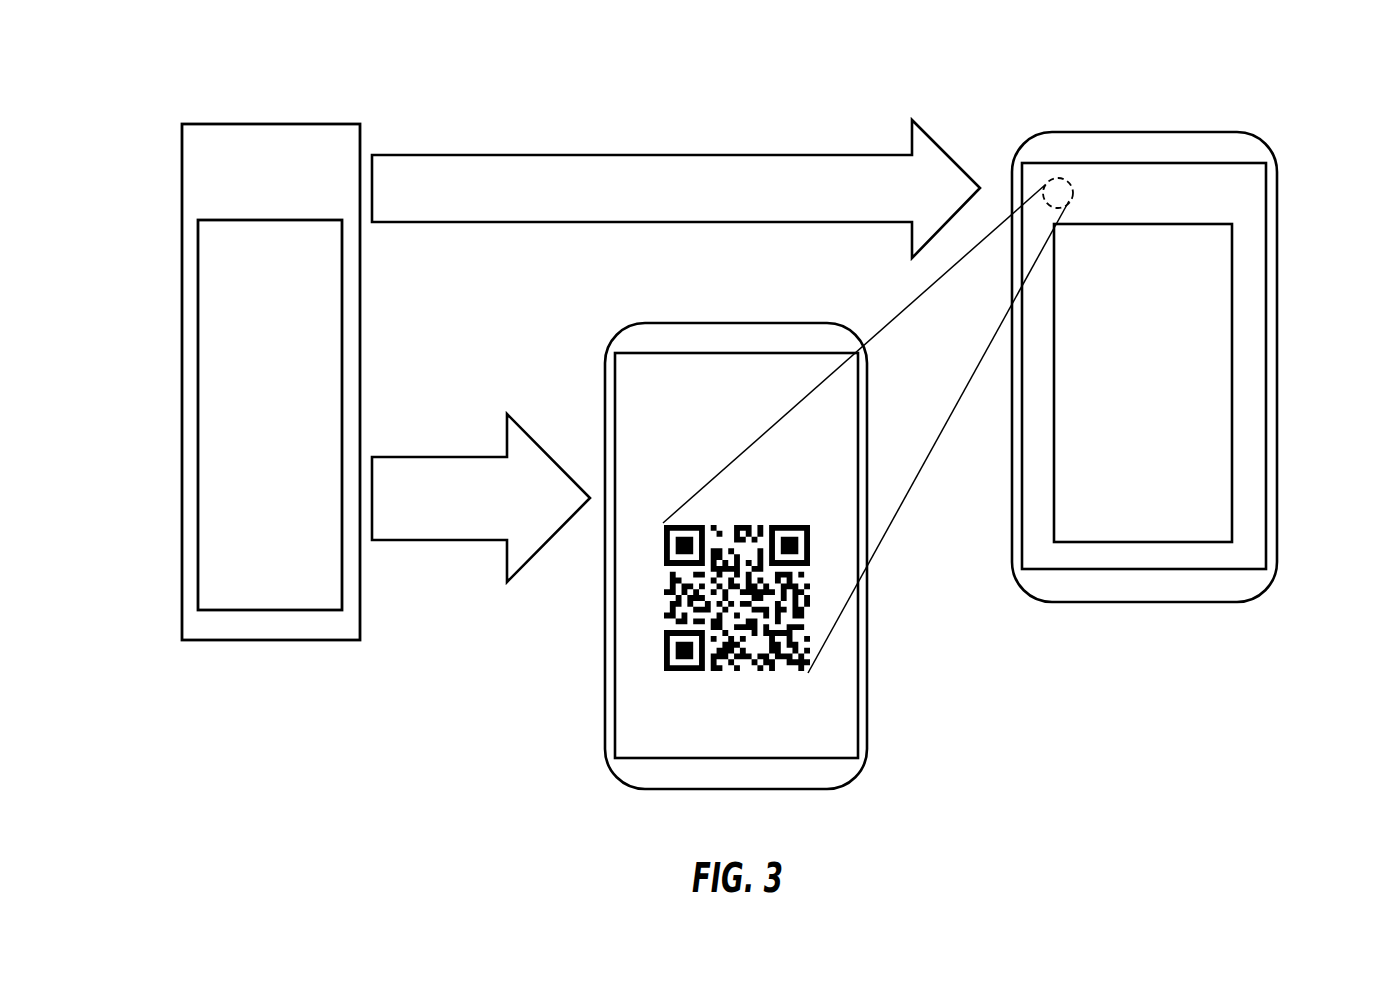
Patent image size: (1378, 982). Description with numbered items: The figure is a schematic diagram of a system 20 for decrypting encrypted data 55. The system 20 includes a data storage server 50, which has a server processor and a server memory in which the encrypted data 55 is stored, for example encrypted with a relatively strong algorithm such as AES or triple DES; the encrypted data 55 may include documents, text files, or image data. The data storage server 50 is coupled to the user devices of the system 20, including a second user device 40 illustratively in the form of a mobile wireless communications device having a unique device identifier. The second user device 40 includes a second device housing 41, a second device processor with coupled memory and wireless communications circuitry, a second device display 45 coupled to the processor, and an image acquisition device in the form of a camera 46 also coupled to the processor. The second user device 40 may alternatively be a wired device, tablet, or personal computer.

The system 20 is at (525, 86).
The second user device 40 is at (1158, 617).
The second device housing 41 is at (1277, 336).
The second device display 45 is at (1185, 434).
The camera 46 is at (1072, 178).
The data storage server 50 is at (272, 655).
The encrypted data 55 is at (226, 452).